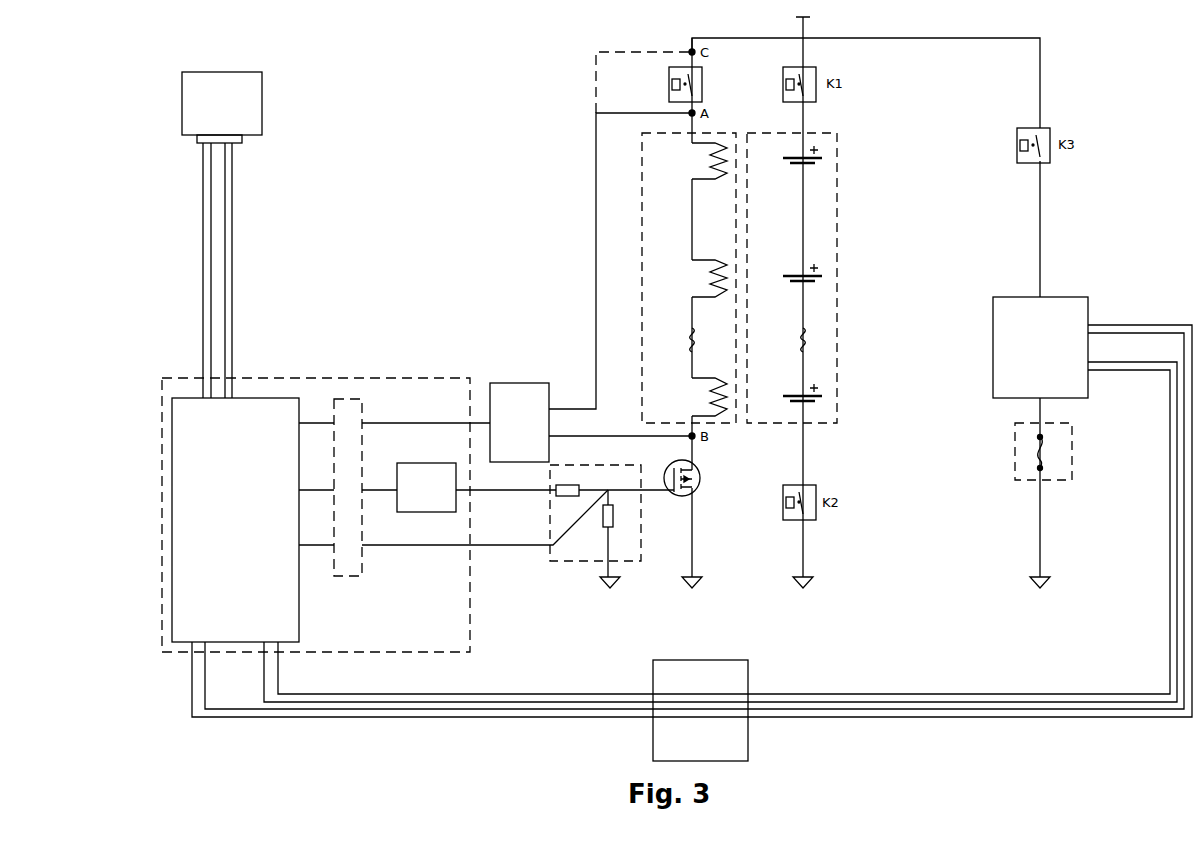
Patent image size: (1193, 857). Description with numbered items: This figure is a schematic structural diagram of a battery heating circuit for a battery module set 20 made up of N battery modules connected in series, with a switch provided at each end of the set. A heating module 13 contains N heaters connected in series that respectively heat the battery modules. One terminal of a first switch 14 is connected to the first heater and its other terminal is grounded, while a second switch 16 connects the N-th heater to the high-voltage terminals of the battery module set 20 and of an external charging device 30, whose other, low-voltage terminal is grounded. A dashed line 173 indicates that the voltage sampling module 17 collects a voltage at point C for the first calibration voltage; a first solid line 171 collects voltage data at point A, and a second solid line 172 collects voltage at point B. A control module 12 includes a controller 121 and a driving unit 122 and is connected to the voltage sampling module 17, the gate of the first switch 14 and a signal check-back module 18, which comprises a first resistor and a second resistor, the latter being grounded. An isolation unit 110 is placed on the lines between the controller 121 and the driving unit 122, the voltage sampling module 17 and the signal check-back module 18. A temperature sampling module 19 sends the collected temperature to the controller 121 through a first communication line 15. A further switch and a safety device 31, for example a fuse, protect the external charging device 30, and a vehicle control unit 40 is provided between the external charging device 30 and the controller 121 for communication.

The control module 12 is at (425, 378).
The heating module 13 is at (645, 215).
The first switch 14 is at (700, 492).
The first communication line 15 is at (232, 228).
The second switch 16 is at (671, 84).
The voltage sampling module 17 is at (517, 383).
The signal check-back module 18 is at (550, 558).
The isolation conversion unit 19 is at (237, 143).
The battery module set 20 is at (823, 424).
The external charging device 30 is at (1070, 297).
The safety device 31 is at (1058, 480).
The vehicle control unit 40 is at (717, 660).
The isolation unit 110 is at (337, 398).
The controller 121 is at (300, 610).
The driving unit 122 is at (407, 463).
The first solid line 171 is at (620, 113).
The second solid line 172 is at (677, 437).
The dashed line 173 is at (600, 52).